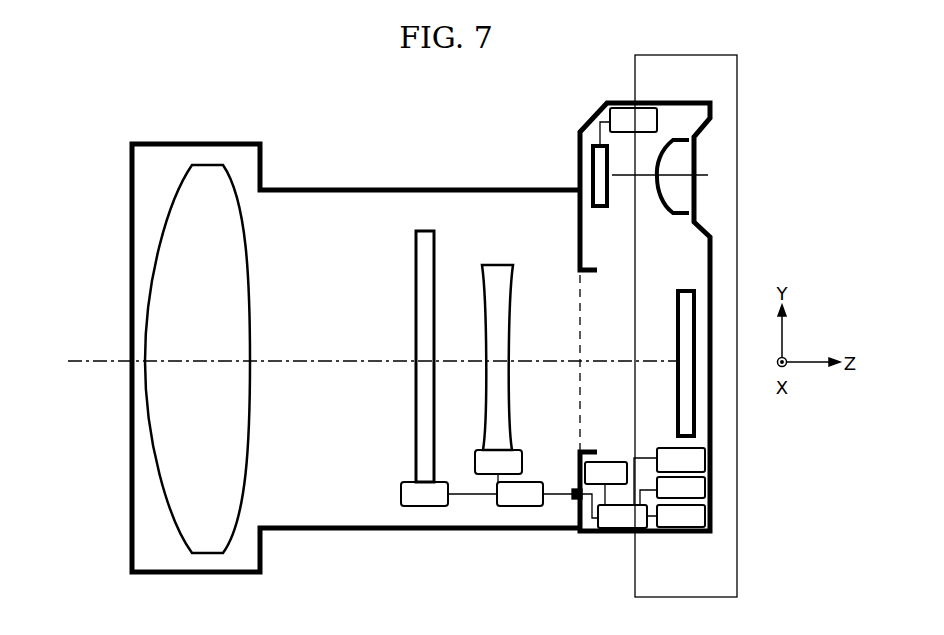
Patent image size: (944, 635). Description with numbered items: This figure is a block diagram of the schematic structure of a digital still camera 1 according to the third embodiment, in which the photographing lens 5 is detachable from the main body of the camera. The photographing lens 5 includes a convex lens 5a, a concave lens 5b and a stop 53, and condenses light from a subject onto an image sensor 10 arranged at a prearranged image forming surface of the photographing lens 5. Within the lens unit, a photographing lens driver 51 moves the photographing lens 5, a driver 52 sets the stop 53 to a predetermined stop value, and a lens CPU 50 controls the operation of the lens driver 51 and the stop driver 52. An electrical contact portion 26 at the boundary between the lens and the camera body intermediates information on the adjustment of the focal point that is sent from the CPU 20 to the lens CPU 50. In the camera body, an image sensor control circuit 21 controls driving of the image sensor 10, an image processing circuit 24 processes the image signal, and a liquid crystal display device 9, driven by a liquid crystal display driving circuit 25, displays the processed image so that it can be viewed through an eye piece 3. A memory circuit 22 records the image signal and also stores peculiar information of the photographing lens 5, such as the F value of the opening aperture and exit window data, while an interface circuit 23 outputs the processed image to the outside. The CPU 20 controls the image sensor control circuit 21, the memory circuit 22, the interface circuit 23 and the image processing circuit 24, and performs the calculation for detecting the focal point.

The digital still camera 1 is at (658, 326).
The eye piece 3 is at (668, 204).
The photographing lens 5 is at (436, 184).
The convex lens 5a is at (236, 222).
The concave lens 5b is at (500, 268).
The liquid crystal display device 9 is at (590, 166).
The image sensor 10 is at (677, 337).
The CPU 20 is at (622, 516).
The image sensor control circuit 21 is at (681, 460).
The memory circuit 22 is at (681, 488).
The interface circuit 23 is at (681, 516).
The image processing circuit 24 is at (606, 473).
The liquid crystal display driving circuit 25 is at (628, 126).
The electrical contact portion 26 is at (560, 501).
The lens CPU 50 is at (520, 494).
The photographing lens driver 51 is at (498, 462).
The stop driver 52 is at (424, 494).
The stop 53 is at (420, 463).